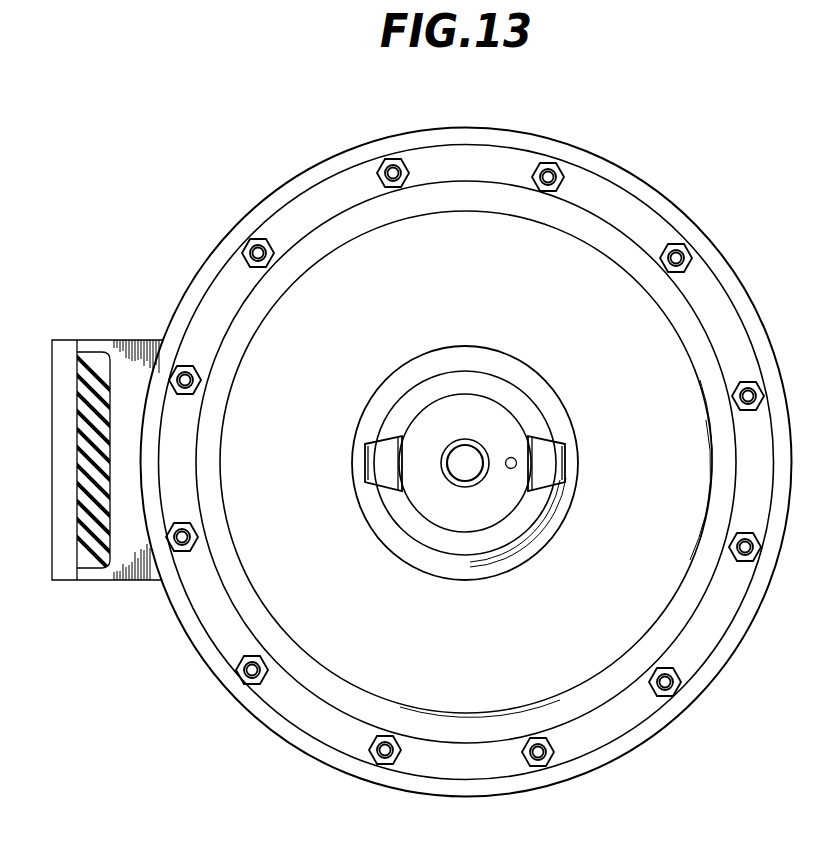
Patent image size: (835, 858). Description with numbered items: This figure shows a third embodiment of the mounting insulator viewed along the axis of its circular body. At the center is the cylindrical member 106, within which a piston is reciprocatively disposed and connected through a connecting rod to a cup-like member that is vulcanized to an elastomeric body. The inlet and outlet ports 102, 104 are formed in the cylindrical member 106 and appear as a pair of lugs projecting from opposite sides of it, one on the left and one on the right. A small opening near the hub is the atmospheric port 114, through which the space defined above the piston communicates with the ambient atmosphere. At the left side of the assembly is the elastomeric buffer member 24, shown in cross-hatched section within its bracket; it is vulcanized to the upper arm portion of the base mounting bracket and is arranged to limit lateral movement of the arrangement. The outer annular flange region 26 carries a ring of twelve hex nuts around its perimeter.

The elastomeric buffer member 24 is at (95, 367).
The cover plate 26 is at (347, 253).
The inlet port 102 is at (557, 465).
The outlet port 104 is at (372, 462).
The cylindrical member 106 is at (423, 507).
The atmospheric port 114 is at (514, 468).